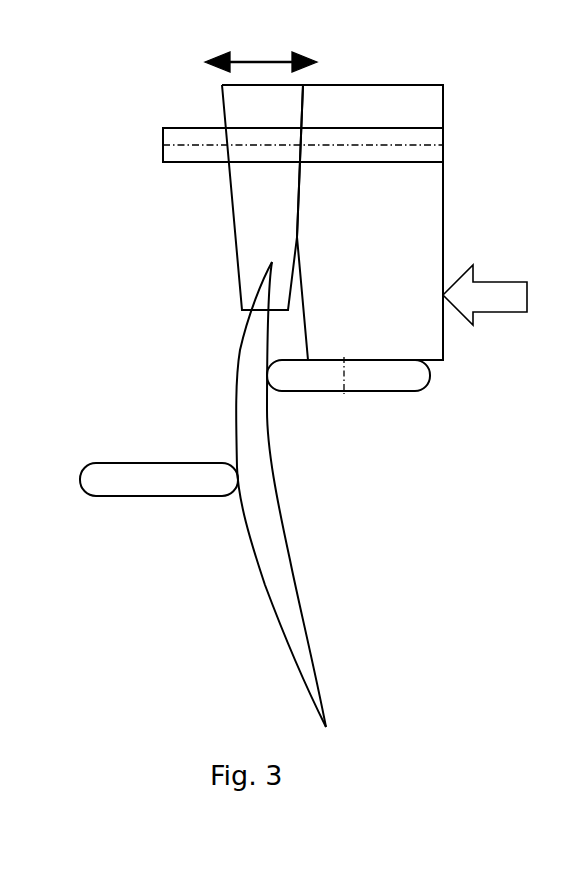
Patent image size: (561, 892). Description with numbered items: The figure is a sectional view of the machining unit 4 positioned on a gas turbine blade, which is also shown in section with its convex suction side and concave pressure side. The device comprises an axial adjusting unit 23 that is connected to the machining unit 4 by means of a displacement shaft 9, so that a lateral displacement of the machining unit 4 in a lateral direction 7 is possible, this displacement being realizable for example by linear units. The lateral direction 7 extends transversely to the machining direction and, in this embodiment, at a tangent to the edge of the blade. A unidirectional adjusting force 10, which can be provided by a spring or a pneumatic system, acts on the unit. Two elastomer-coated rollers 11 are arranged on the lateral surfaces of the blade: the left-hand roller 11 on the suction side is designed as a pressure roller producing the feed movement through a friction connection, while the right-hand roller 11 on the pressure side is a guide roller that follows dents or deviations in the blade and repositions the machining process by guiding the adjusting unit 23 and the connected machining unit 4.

The machining unit 4 is at (243, 192).
The lateral direction 7 is at (273, 63).
The displacement shaft 9 is at (402, 153).
The unidirectional adjusting force 10 is at (495, 293).
The roller 11 is at (377, 375).
The axial adjusting unit 23 is at (385, 102).